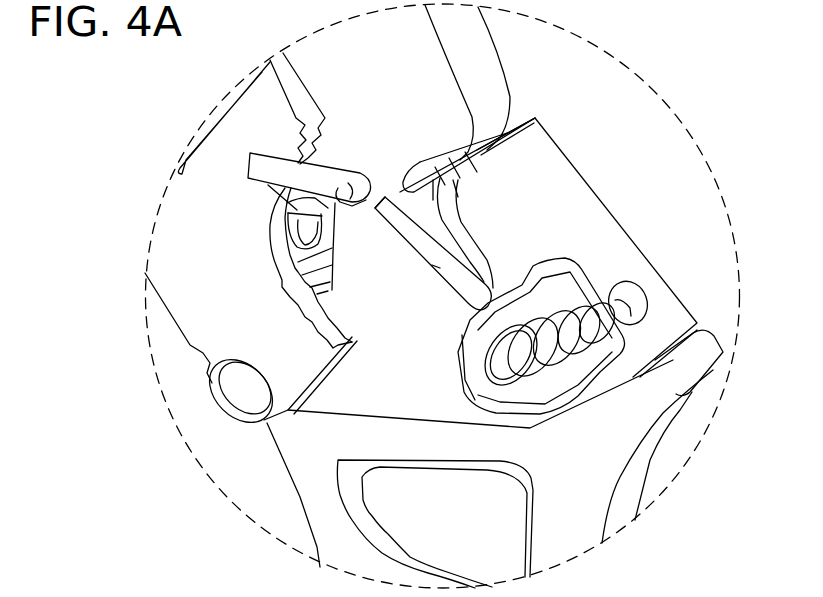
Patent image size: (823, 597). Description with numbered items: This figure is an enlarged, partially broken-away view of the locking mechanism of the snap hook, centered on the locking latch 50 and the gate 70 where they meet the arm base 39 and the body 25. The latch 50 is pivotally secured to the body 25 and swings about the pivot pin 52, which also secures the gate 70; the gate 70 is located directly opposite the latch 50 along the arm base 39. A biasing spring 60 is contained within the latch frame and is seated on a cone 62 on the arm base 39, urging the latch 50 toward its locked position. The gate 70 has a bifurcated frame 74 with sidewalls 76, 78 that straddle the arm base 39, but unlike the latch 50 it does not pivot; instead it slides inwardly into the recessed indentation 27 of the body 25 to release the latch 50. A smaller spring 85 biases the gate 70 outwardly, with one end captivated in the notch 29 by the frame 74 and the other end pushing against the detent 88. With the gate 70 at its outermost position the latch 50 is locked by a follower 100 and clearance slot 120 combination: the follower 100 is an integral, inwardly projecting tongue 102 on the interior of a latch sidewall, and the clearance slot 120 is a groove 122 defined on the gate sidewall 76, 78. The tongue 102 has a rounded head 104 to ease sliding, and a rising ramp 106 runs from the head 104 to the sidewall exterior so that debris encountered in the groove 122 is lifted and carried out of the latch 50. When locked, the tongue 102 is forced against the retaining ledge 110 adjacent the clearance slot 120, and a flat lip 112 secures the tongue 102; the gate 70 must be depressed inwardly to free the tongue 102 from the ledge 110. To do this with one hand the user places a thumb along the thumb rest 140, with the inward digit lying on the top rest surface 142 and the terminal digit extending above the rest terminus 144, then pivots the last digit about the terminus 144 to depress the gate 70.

The body 25 is at (678, 447).
The recessed indentation 27 is at (417, 167).
The notch 29 is at (488, 366).
The arm base 39 is at (415, 58).
The locking latch 50 is at (188, 372).
The pivot pin 52 is at (245, 405).
The biasing spring 60 is at (282, 276).
The cone 62 is at (287, 209).
The pivoting gate 70 is at (619, 178).
The bifurcated frame 74 is at (540, 162).
The gate sidewall 76 is at (469, 190).
The gate sidewall 78 is at (507, 130).
The spring 85 is at (550, 292).
The detent 88 is at (638, 294).
The follower 100 is at (339, 136).
The tongue 102 is at (270, 180).
The rounded head 104 is at (367, 170).
The rising ramp 106 is at (350, 190).
The retaining ledge 110 is at (390, 244).
The flat lip 112 is at (374, 202).
The clearance slot 120 is at (432, 319).
The groove 122 is at (340, 360).
The thumb rest 140 is at (714, 405).
The top rest surface 142 is at (642, 465).
The rest terminus 144 is at (710, 353).